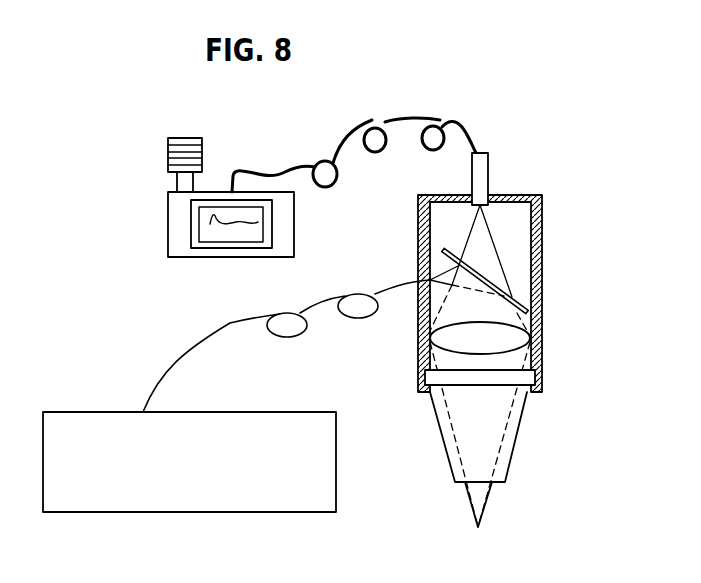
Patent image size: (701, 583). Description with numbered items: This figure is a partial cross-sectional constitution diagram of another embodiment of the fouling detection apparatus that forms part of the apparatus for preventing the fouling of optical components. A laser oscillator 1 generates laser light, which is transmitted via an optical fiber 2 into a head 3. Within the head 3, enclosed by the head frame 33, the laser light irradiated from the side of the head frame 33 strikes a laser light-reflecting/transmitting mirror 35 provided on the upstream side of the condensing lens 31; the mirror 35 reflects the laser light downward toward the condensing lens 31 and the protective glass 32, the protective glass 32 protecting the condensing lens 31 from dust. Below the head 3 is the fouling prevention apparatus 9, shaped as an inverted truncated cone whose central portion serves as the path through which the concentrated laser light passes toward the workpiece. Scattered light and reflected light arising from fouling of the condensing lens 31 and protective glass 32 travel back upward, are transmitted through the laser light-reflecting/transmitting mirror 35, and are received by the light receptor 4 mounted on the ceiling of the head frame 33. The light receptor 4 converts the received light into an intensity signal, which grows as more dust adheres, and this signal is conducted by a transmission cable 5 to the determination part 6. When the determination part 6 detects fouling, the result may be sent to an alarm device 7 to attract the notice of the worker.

The laser oscillator 1 is at (80, 512).
The optical fiber 2 is at (177, 360).
The head 3 is at (614, 279).
The light receptor 4 is at (490, 168).
The transmission cable 5 is at (428, 150).
The determination part 6 is at (180, 250).
The alarm device 7 is at (168, 146).
The fouling prevention apparatus 9 is at (492, 437).
The condensing lens 31 is at (518, 342).
The protective glass 32 is at (528, 378).
The head frame 33 is at (542, 217).
The laser light-reflecting/transmitting mirror 35 is at (510, 288).